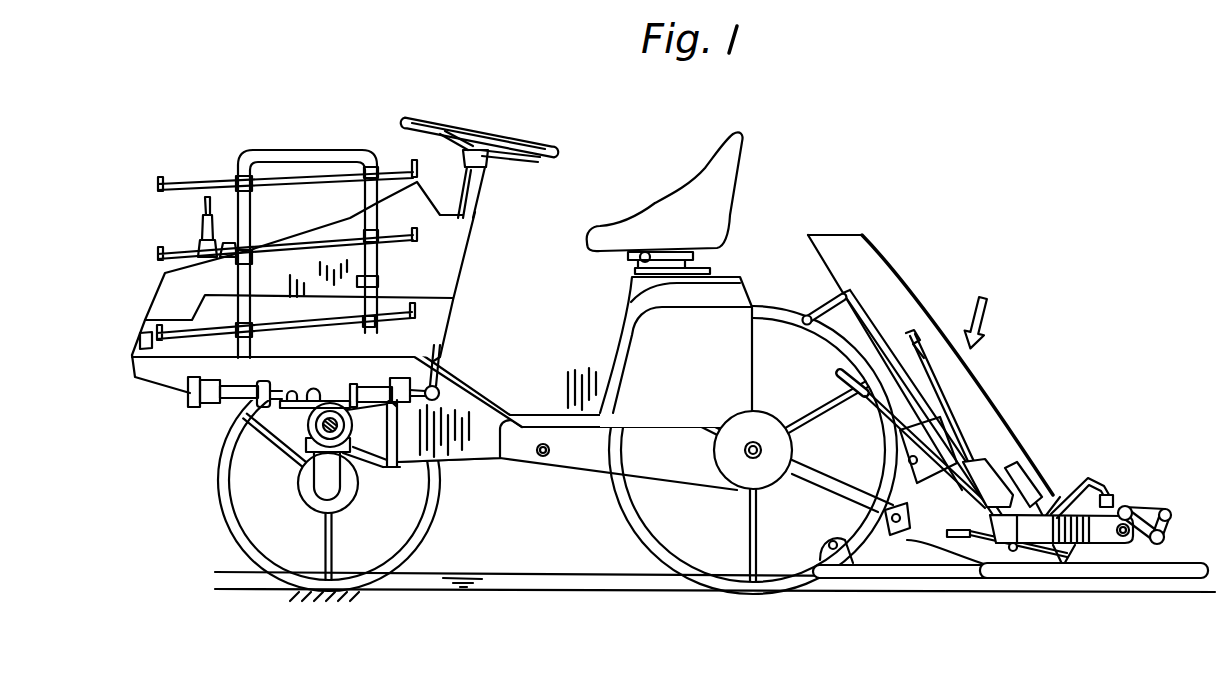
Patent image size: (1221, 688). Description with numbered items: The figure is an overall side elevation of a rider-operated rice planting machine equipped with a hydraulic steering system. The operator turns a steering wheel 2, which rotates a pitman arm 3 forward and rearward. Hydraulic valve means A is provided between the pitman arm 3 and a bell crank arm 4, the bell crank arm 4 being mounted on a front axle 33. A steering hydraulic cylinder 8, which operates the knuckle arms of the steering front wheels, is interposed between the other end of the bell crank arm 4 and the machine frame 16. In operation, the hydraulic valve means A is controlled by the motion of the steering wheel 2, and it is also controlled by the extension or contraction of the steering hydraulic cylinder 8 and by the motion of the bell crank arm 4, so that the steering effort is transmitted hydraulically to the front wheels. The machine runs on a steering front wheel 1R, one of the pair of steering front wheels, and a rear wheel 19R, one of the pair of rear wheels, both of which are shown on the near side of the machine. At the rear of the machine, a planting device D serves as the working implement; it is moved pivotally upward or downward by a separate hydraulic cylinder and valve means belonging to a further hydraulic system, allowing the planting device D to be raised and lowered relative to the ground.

The steering wheel 2 is at (517, 142).
The pitman arm 3 is at (437, 370).
The hydraulic valve means A is at (372, 383).
The bell crank arm 4 is at (298, 407).
The steering hydraulic cylinder 8 is at (223, 407).
The machine frame 16 is at (163, 388).
The front axle 33 is at (345, 441).
The steering front wheel 1R is at (226, 525).
The rear wheel 19R is at (613, 490).
The planting device D is at (981, 308).